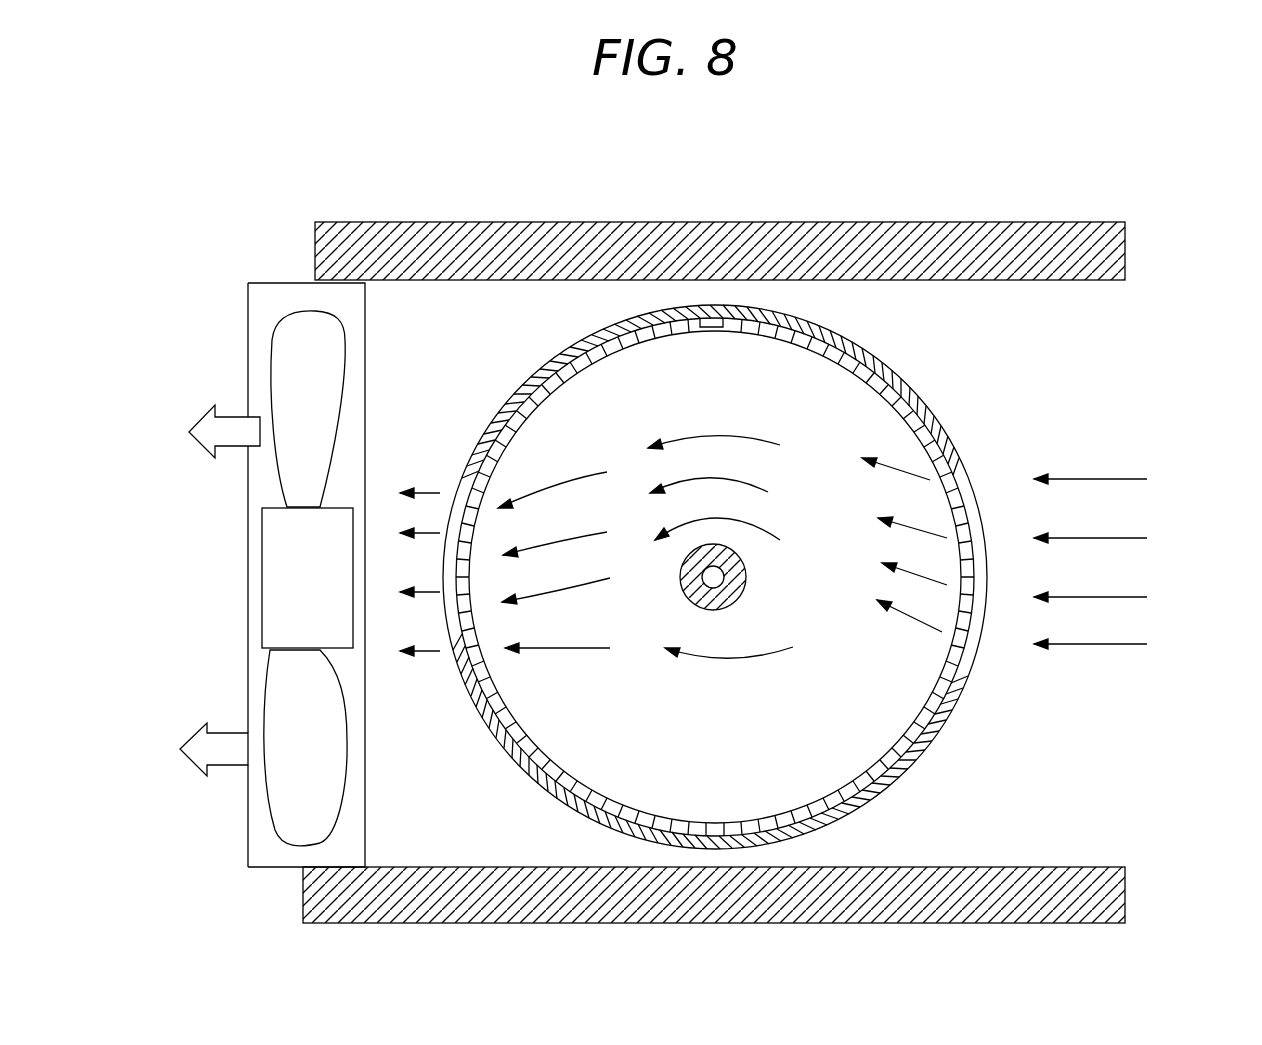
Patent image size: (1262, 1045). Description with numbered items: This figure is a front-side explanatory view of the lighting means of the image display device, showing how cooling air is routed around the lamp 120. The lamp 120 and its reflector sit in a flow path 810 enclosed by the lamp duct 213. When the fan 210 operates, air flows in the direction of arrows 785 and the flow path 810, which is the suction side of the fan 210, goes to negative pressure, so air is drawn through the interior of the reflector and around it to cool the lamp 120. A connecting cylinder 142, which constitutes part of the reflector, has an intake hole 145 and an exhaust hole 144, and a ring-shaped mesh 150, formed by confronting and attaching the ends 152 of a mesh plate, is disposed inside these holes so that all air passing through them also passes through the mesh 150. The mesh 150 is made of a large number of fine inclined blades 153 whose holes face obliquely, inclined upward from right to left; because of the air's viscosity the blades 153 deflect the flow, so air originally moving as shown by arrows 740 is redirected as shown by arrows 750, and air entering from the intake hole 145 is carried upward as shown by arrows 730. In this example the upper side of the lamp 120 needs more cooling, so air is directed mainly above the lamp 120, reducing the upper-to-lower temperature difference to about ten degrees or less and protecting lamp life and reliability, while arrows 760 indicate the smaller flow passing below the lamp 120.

The lamp 120 is at (740, 588).
The connecting cylinder 142 is at (853, 343).
The exhaust hole 144 is at (446, 503).
The intake hole 145 is at (980, 577).
The mesh 150 is at (463, 640).
The ends of mesh plate 152 is at (712, 322).
The blades 153 is at (967, 618).
The fan 210 is at (307, 367).
The lamp duct 213 is at (1118, 242).
The arrows (upward airflow) 730 is at (707, 435).
The arrows (original airflow direction) 740 is at (1093, 478).
The arrows (deflected airflow) 750 is at (897, 462).
The arrows (airflow below lamp) 760 is at (718, 658).
The arrows (fan airflow) 785 is at (231, 423).
The flow path 810 is at (491, 340).